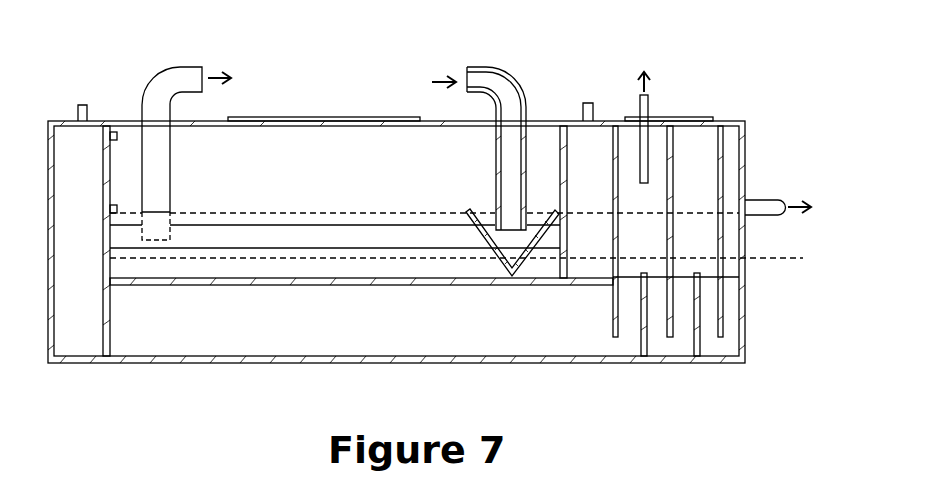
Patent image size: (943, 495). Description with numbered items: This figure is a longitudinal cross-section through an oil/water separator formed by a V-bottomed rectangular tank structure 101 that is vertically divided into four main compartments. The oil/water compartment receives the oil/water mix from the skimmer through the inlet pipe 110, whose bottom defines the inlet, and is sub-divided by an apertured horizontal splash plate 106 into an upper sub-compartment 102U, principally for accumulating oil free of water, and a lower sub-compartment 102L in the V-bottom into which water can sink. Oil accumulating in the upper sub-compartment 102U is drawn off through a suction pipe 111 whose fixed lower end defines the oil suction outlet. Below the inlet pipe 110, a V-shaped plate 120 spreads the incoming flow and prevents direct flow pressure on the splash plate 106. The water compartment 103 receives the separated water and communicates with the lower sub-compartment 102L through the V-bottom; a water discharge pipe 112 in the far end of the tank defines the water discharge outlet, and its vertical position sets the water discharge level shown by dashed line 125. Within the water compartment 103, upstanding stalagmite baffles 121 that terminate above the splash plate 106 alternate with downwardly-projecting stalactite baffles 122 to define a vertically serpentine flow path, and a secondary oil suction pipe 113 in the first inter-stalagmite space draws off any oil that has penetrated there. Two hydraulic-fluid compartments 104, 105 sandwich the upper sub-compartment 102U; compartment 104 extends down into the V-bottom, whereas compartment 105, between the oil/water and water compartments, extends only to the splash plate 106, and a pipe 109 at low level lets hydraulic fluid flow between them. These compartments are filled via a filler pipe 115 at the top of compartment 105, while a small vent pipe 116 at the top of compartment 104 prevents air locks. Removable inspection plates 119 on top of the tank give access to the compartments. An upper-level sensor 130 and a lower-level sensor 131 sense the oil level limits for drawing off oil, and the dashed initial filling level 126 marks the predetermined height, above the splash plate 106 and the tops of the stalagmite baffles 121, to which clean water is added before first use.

The tank structure 101 is at (202, 363).
The upper sub-compartment 102U is at (335, 188).
The lower sub-compartment 102L is at (335, 288).
The water compartment 103 is at (701, 186).
The hydraulic-fluid compartment 104 is at (102, 283).
The hydraulic-fluid compartment 105 is at (582, 202).
The splash plate 106 is at (417, 285).
The pipe 109 is at (298, 223).
The inlet pipe 110 is at (488, 70).
The suction pipe 111 is at (180, 73).
The water discharge pipe 112 is at (763, 198).
The secondary oil suction pipe 113 is at (648, 107).
The filler pipe 115 is at (585, 102).
The vent pipe 116 is at (80, 105).
The inspection plate 119 is at (355, 117).
The V-shaped plate 120 is at (472, 215).
The stalagmite baffle 121 is at (648, 313).
The stalactite baffle 122 is at (617, 315).
The water discharge level 125 is at (687, 213).
The initial filling level 126 is at (474, 258).
The upper-level sensor 130 is at (115, 137).
The lower-level sensor 131 is at (117, 208).